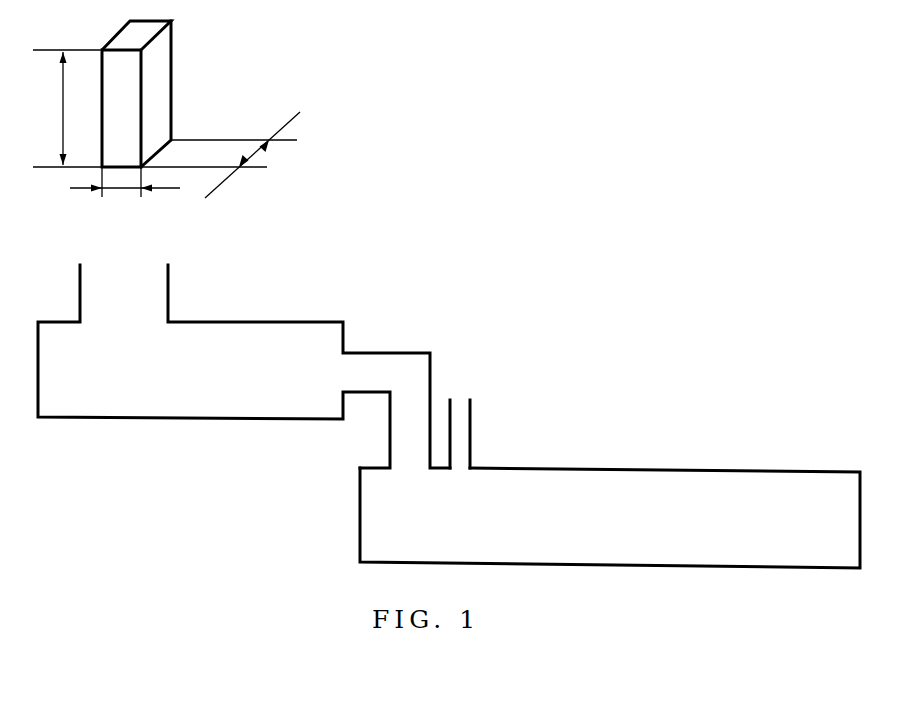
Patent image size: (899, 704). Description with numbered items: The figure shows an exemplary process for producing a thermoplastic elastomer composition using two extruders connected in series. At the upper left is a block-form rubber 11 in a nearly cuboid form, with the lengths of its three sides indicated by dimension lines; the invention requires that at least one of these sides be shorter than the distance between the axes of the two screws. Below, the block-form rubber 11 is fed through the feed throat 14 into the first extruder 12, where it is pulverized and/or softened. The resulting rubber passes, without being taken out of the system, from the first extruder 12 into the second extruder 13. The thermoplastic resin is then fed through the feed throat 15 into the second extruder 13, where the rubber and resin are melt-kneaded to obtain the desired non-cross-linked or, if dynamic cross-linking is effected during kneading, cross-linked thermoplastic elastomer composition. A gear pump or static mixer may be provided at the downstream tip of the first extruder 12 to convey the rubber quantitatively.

The block-form rubber 11 is at (155, 78).
The first extruder 12 is at (127, 384).
The second extruder 13 is at (394, 514).
The feed throat of the first extruder 14 is at (176, 284).
The feed throat of the second extruder 15 is at (476, 421).